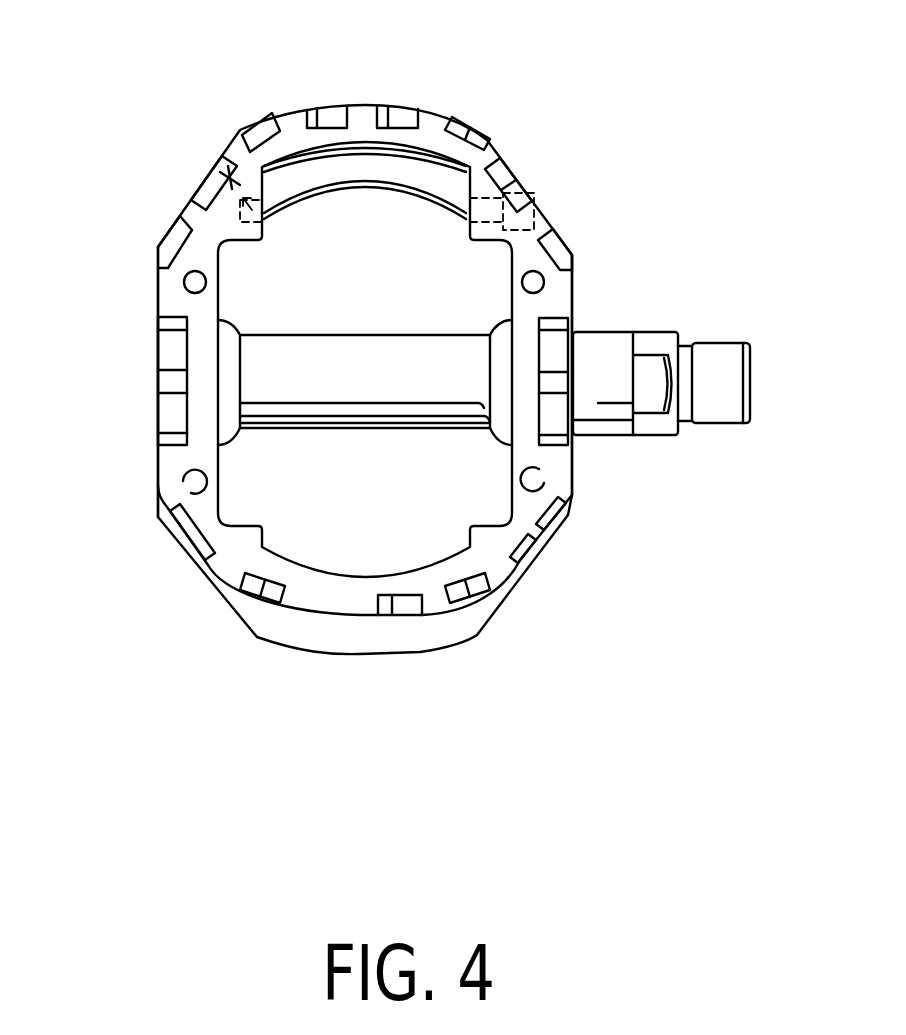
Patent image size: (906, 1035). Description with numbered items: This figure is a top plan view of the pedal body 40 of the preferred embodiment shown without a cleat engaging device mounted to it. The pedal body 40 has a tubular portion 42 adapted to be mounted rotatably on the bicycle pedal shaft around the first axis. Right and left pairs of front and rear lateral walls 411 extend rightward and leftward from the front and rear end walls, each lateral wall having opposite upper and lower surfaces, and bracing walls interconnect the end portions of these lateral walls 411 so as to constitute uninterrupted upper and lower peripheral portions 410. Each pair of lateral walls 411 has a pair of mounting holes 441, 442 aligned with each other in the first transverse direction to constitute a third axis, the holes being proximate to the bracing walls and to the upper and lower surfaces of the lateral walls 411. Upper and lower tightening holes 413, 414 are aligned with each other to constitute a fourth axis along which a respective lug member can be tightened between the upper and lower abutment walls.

The pedal body 40 is at (505, 148).
The upper and lower peripheral portions 410 is at (438, 133).
The front and rear lateral walls 411 is at (562, 303).
The upper tightening hole 413 is at (537, 281).
The lower tightening hole 414 is at (540, 479).
The tubular portion 42 is at (275, 365).
The mounting hole 441 is at (508, 217).
The mounting hole 442 is at (218, 162).